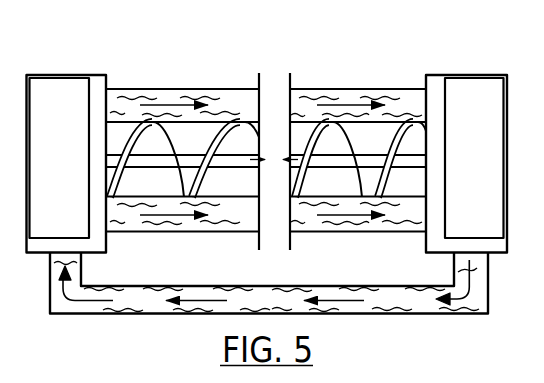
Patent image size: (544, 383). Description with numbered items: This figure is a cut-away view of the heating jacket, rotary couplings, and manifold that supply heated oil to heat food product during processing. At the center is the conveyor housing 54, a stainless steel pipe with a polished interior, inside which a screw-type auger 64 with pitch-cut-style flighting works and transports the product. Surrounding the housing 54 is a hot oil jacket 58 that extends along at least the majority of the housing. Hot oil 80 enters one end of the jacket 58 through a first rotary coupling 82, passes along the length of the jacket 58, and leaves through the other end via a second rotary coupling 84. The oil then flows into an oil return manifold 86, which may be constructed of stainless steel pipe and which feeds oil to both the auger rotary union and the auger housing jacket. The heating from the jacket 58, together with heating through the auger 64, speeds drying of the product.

The housing 54 is at (190, 118).
The hot oil jacket 58 is at (130, 89).
The screw-type auger 64 is at (312, 132).
The hot oil 80 is at (162, 97).
The first rotary coupling 82 is at (68, 74).
The second rotary coupling 84 is at (472, 74).
The oil return manifold 86 is at (382, 316).